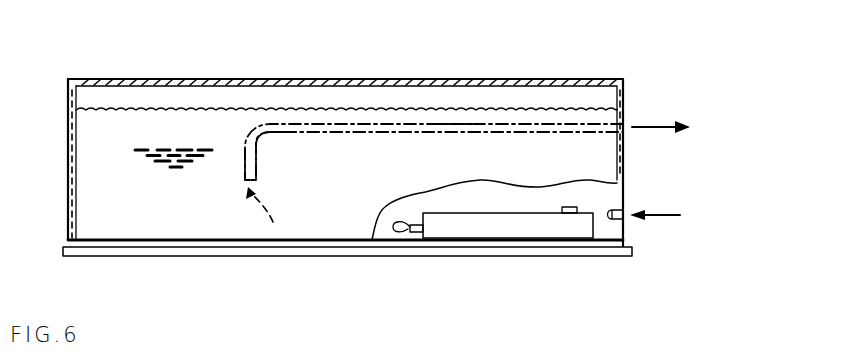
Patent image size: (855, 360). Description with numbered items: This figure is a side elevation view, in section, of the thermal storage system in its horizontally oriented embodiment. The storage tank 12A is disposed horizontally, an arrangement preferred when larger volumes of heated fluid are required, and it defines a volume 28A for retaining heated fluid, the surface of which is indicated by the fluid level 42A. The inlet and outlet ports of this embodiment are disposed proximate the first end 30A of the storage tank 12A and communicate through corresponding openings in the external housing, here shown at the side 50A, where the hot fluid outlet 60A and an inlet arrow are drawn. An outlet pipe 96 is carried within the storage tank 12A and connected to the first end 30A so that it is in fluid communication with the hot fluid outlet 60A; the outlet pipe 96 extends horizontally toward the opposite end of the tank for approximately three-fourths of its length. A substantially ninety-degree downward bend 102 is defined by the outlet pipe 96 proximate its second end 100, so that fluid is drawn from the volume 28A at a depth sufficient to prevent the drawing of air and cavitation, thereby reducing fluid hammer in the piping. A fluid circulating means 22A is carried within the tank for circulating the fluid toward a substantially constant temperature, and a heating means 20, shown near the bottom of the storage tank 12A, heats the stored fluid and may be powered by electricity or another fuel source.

The storage tank 12A is at (237, 80).
The outlet pipe 96 is at (293, 123).
The fluid circulating means 22A is at (450, 123).
The first end 30A is at (623, 111).
The hot fluid outlet 60A is at (622, 128).
The side of external housing 50A is at (625, 199).
The volume 28A is at (346, 140).
The fluid level 42A is at (97, 112).
The second end of outlet pipe 100 is at (243, 160).
The downward bend 102 is at (260, 136).
The heating means 20 is at (485, 246).